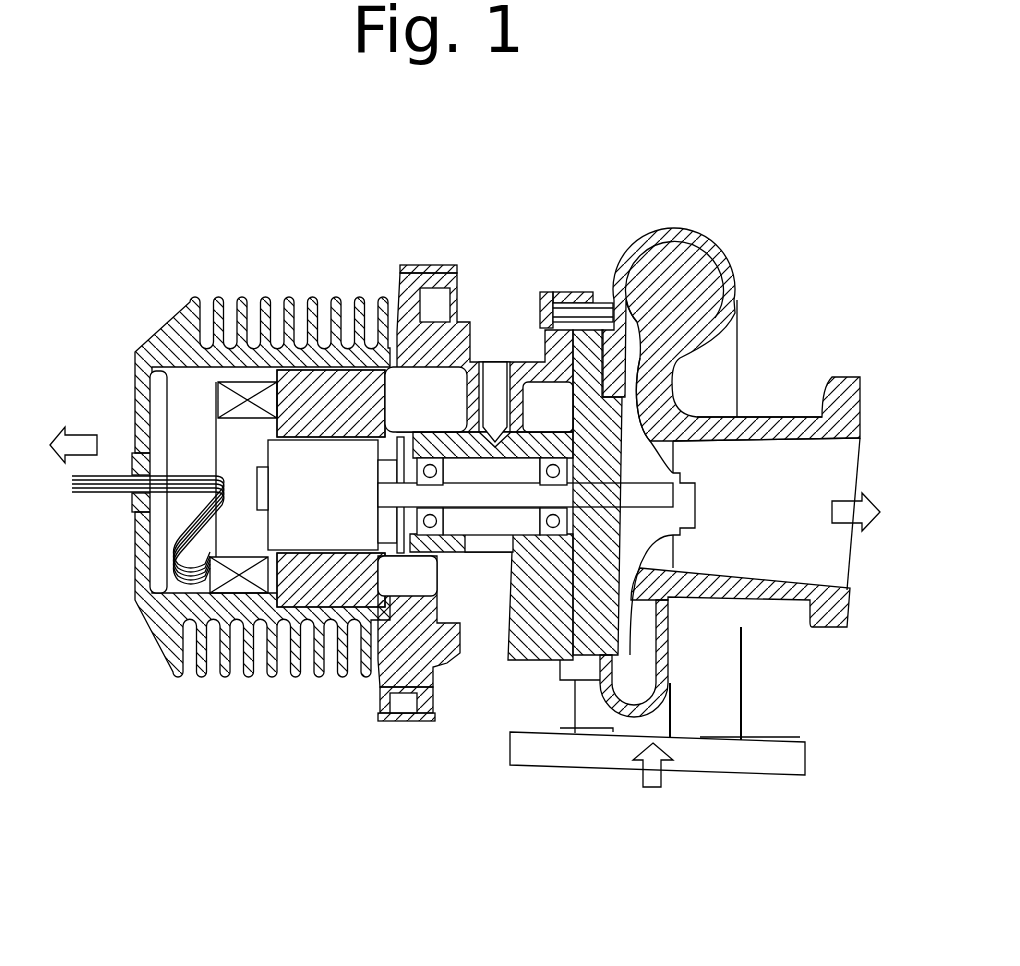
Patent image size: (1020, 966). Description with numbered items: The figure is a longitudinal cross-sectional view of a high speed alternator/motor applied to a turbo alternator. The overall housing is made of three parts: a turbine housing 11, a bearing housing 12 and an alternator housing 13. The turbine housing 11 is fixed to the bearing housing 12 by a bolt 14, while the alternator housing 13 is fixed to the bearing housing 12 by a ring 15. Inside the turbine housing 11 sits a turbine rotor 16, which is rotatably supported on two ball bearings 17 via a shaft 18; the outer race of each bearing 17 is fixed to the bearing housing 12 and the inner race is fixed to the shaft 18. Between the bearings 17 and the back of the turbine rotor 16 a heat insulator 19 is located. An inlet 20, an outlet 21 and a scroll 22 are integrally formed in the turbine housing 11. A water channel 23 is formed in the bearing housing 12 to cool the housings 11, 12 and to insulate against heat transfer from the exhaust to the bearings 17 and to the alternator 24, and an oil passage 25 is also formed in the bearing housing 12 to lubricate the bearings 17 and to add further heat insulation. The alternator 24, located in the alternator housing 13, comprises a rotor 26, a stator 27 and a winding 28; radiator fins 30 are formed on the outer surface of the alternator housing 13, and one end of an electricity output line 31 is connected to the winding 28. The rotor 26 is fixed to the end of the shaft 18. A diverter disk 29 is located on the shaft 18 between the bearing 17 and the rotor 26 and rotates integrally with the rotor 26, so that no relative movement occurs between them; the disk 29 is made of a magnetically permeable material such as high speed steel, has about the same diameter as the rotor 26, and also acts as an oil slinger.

The turbine housing 11 is at (718, 243).
The bearing housing 12 is at (468, 300).
The alternator housing 13 is at (178, 300).
The bolt 14 is at (545, 287).
The ring 15 is at (400, 280).
The turbine rotor 16 is at (665, 510).
The ball bearings 17 is at (428, 523).
The shaft 18 is at (490, 510).
The heat insulator 19 is at (605, 432).
The inlet 20 is at (667, 765).
The outlet 21 is at (850, 575).
The scroll 22 is at (693, 298).
The water channel 23 is at (617, 365).
The alternator 24 is at (196, 407).
The oil passage 25 is at (507, 360).
The rotor 26 is at (247, 676).
The stator 27 is at (303, 530).
The winding 28 is at (247, 585).
The diverter disk 29 is at (381, 550).
The radiator fins 30 is at (271, 296).
The electricity output line 31 is at (90, 495).